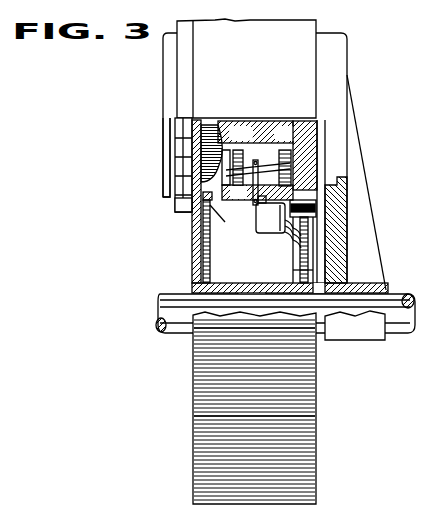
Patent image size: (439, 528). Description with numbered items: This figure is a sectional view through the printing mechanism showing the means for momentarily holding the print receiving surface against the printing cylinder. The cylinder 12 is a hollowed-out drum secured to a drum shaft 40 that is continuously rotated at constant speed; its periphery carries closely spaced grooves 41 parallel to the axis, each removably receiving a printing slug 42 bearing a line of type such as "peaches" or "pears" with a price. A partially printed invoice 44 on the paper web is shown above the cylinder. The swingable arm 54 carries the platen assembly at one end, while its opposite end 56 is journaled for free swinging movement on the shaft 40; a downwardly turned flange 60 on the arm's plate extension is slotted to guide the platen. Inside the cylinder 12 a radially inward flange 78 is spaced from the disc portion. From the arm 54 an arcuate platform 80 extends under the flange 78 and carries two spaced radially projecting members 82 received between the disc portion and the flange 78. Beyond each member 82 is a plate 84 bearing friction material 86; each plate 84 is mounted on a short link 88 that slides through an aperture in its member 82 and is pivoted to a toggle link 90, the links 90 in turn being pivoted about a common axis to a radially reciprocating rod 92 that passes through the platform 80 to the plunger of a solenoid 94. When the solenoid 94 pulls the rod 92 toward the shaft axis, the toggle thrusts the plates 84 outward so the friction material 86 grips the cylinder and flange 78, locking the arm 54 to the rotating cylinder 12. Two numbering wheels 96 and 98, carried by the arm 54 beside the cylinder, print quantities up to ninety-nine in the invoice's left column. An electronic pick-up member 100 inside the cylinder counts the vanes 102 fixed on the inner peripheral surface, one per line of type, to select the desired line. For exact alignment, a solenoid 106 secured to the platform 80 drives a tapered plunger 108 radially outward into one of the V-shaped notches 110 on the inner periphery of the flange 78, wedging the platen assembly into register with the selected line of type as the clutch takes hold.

The cylinder 12 is at (316, 420).
The drum shaft 40 is at (162, 300).
The grooves 41 is at (195, 418).
The printing slugs 42 is at (193, 328).
The partially printed invoice 44 is at (290, 42).
The arm 54 is at (340, 255).
The end of arm 56 is at (368, 330).
The flange 60 is at (167, 142).
The flange 78 is at (310, 157).
The platform 80 is at (224, 208).
The projecting members 82 is at (258, 132).
The plate 84 is at (318, 135).
The friction material 86 is at (298, 170).
The short link 88 is at (228, 172).
The link 90 is at (245, 166).
The rod 92 is at (257, 192).
The solenoid 94 is at (272, 222).
The numbering wheel 96 is at (170, 199).
The numbering wheel 98 is at (185, 214).
The electronic pick-up member 100 is at (193, 221).
The vanes 102 is at (200, 258).
The solenoid 106 is at (317, 211).
The plunger 108 is at (306, 232).
The notches 110 is at (308, 270).